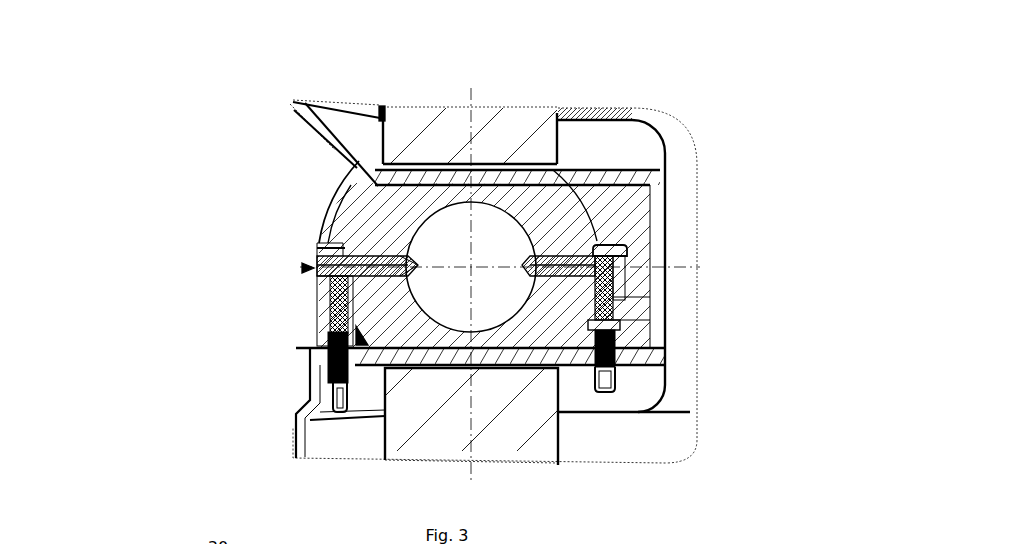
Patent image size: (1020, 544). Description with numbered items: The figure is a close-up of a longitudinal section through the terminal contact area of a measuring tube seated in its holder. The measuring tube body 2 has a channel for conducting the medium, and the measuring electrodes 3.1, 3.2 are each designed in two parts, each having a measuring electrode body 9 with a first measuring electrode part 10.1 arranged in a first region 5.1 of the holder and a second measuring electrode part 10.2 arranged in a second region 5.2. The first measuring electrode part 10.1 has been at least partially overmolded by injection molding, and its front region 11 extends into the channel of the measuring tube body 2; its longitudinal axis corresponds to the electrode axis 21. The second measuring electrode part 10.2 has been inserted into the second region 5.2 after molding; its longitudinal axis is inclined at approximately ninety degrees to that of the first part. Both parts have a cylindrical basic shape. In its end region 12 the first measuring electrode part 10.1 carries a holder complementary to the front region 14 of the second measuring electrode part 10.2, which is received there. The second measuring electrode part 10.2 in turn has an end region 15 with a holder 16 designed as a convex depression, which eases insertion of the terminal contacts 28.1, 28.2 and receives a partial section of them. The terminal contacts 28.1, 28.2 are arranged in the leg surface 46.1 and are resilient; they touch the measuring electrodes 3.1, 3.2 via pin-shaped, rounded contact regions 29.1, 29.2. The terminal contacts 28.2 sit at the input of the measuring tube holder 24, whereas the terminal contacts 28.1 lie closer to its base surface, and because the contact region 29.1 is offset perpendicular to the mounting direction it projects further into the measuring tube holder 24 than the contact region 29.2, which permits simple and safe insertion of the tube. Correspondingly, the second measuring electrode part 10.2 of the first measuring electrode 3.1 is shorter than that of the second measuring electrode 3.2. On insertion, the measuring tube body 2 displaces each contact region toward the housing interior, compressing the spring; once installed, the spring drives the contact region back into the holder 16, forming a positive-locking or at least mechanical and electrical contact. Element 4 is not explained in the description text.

The measuring tube body 2 is at (549, 327).
The electrode axis 21 is at (490, 265).
The first measuring electrode part 10.1 is at (313, 256).
The front region 11 is at (418, 260).
The front region 14 is at (316, 247).
The end region 12 is at (317, 257).
The second measuring electrode 3.2 is at (303, 268).
The second measuring electrode part 10.2 is at (322, 302).
The end region 15 is at (357, 330).
The contact region 29.2 is at (330, 337).
The holder 16 is at (312, 346).
The second terminal contact 28.2 is at (333, 374).
The first region 5.1 is at (613, 186).
The measuring tube holder 24 is at (606, 246).
The cap 4 is at (593, 243).
The first measuring electrode 3.1 is at (627, 258).
The measuring electrode body 9 is at (632, 268).
The second region 5.2 is at (628, 297).
The contact region 29.1 is at (615, 318).
The first terminal contact 28.1 is at (612, 340).
The leg surface 46.1 is at (598, 362).